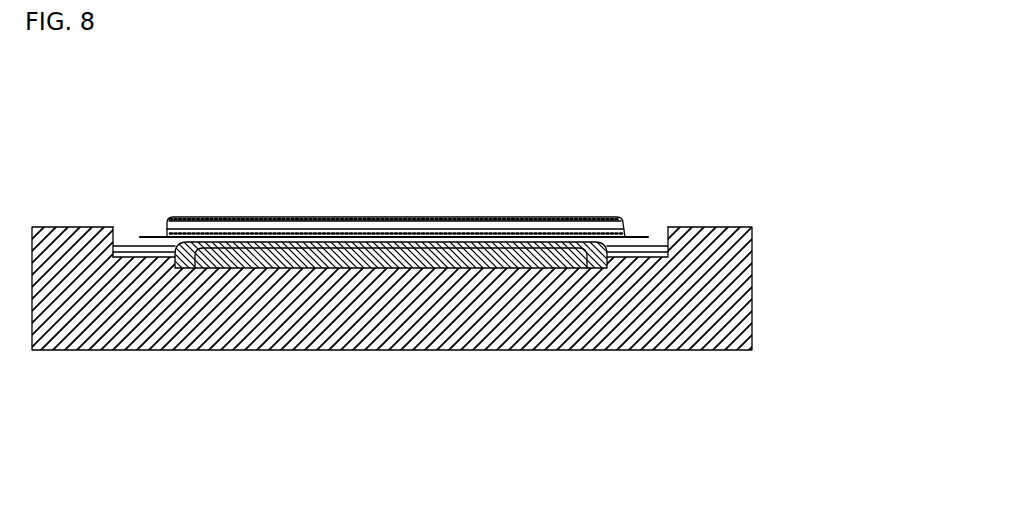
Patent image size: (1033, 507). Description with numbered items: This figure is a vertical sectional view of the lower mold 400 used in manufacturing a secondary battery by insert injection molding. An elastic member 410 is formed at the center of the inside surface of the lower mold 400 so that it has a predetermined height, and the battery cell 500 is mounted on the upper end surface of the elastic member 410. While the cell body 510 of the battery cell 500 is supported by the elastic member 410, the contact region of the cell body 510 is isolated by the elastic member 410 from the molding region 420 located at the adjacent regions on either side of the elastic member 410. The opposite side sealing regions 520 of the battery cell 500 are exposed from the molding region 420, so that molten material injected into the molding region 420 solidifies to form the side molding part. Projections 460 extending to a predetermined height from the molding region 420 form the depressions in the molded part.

The lower mold 400 is at (653, 350).
The elastic member 410 is at (445, 266).
The molding region 420 is at (126, 228).
The projections 460 is at (141, 254).
The battery cell 500 is at (550, 192).
The cell body 510 is at (440, 217).
The sealing regions 520 is at (645, 236).